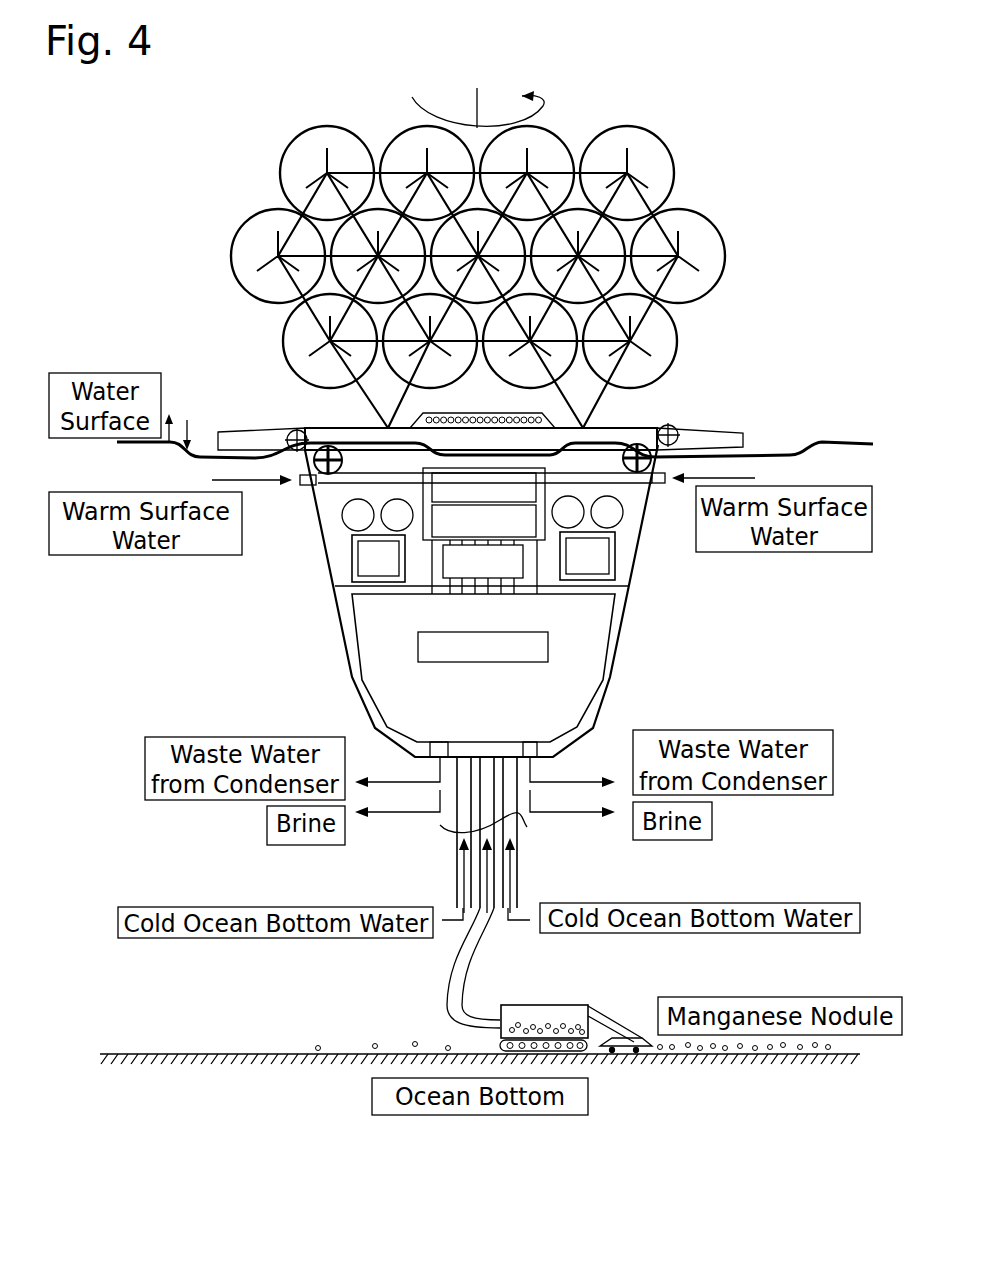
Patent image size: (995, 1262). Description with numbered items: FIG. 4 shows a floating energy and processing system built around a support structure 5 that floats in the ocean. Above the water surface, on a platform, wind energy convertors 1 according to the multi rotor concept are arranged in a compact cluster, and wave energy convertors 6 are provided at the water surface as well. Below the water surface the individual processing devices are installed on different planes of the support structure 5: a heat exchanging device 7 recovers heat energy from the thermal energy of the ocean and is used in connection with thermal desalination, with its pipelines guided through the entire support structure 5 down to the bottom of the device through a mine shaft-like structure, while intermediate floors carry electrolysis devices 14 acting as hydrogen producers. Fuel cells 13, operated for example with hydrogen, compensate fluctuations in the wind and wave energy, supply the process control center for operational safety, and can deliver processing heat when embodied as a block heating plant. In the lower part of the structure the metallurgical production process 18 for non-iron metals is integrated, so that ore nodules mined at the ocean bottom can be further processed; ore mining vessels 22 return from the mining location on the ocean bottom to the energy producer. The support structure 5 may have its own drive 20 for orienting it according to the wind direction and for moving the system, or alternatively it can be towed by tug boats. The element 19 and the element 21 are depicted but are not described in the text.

The wind energy convertor 1 is at (277, 255).
The support structure 5 is at (303, 440).
The wave energy convertor 6 is at (225, 440).
The heat exchanging device 7 is at (443, 480).
The fuel cell 13 is at (352, 580).
The electrolysis device 14 is at (445, 560).
The metallurgical production process 18 is at (375, 643).
The air intake 19 is at (550, 422).
The drive 20 is at (676, 438).
The cold water pipe 21 is at (490, 900).
The ore mining vessel 22 is at (550, 1013).